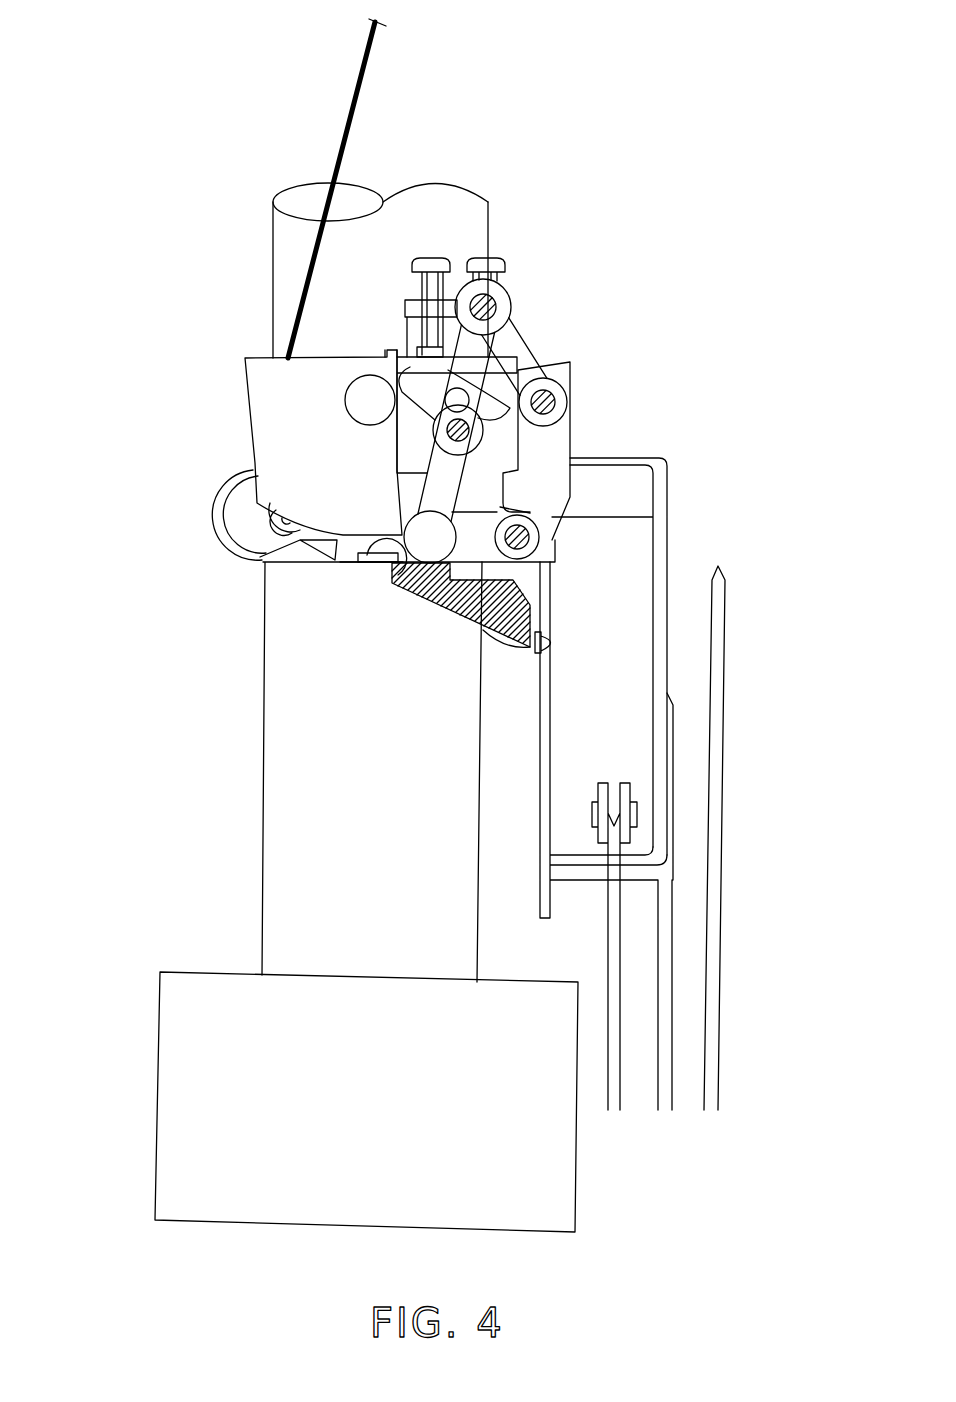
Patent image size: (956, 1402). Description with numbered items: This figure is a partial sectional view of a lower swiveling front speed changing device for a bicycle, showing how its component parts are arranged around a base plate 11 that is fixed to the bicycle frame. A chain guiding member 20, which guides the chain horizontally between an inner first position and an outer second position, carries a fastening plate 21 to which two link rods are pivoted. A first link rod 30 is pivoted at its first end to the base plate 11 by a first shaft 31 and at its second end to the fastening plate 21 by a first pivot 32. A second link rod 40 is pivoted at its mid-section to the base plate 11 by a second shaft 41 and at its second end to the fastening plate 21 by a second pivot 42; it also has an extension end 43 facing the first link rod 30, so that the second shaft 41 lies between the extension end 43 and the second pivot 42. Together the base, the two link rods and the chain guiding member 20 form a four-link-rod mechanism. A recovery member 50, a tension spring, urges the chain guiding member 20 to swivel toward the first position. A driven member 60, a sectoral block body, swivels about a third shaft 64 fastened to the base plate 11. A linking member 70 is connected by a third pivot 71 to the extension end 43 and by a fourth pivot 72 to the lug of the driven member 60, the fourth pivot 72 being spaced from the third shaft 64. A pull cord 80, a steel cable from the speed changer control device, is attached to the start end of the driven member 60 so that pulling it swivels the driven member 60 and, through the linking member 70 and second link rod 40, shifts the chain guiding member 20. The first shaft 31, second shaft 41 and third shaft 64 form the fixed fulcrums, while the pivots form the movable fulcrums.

The base plate 11 is at (388, 356).
The chain guiding member 20 is at (670, 543).
The fastening plate 21 is at (463, 603).
The first link rod 30 is at (396, 527).
The first shaft 31 is at (432, 257).
The first pivot 32 is at (412, 553).
The second link rod 40 is at (571, 431).
The second shaft 41 is at (555, 397).
The second pivot 42 is at (527, 545).
The extension end 43 is at (497, 257).
The recovery member 50 is at (460, 616).
The driven member 60 is at (279, 392).
The third shaft 64 is at (363, 403).
The linking member 70 is at (476, 360).
The third pivot 71 is at (486, 294).
The fourth pivot 72 is at (447, 435).
The pull cord 80 is at (357, 86).